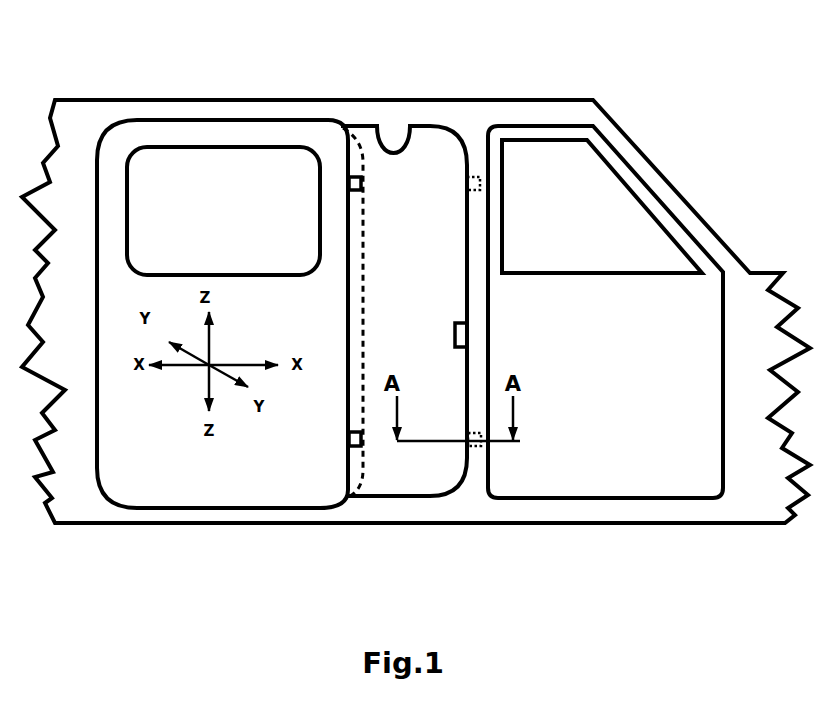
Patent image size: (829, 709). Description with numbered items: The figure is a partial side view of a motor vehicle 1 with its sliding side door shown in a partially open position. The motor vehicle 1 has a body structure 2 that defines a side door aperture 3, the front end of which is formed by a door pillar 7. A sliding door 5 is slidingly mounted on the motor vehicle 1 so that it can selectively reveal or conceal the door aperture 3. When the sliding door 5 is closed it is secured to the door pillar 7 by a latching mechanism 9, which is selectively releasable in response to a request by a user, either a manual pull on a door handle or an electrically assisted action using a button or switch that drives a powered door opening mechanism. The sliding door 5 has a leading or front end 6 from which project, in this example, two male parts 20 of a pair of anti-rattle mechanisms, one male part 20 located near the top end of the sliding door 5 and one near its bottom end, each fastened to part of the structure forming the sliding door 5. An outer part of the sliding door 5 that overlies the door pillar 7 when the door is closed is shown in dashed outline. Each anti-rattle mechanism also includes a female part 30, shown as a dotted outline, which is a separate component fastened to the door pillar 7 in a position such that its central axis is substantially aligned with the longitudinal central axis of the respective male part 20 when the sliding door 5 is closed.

The motor vehicle 1 is at (142, 98).
The body structure 2 is at (199, 98).
The side door aperture 3 is at (388, 145).
The sliding door 5 is at (268, 123).
The front end 6 is at (348, 335).
The door pillar 7 is at (466, 304).
The latching mechanism 9 is at (455, 333).
The male part 20 is at (357, 194).
The female part 30 is at (473, 191).